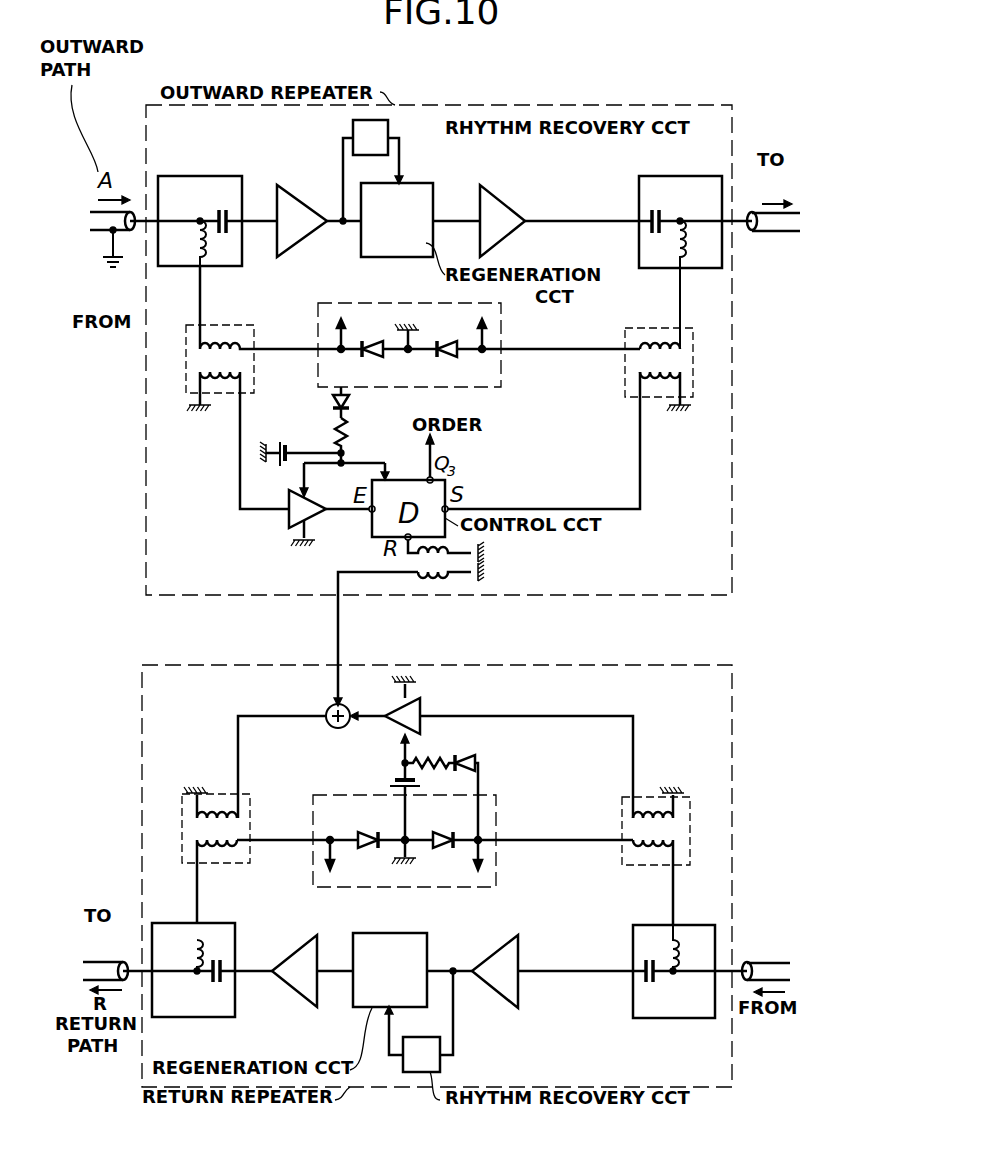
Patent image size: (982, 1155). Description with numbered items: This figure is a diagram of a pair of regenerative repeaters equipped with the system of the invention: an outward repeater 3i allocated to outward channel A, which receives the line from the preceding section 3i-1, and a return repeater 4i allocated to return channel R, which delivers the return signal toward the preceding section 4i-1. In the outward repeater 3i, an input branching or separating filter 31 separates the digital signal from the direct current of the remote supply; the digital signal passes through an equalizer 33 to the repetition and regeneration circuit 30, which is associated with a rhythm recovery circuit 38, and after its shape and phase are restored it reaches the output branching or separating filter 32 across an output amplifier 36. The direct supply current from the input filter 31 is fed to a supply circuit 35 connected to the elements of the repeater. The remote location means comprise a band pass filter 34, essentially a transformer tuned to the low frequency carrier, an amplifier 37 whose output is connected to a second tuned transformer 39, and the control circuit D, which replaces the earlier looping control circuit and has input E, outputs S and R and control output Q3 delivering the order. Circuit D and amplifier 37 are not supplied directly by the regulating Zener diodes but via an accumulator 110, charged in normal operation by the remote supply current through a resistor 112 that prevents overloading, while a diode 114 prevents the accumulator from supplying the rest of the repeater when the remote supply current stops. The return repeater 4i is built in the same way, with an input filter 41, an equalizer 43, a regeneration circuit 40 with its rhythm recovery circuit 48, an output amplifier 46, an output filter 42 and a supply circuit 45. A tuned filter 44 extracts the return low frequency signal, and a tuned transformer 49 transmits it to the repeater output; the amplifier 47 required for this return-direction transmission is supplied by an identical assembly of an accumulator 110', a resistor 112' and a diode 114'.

The regenerative repeater 3i is at (734, 589).
The regenerative repeater 4i is at (734, 681).
The outward path cable section from preceding repeater 3i-1 is at (92, 240).
The return path cable section to preceding repeater 4i-1 is at (141, 962).
The repetition and regeneration circuit 30 is at (361, 247).
The input branching or separating filter 31 is at (200, 176).
The output branching or separating filter 32 is at (674, 176).
The equalizer 33 is at (302, 204).
The band pass filter 34 is at (222, 326).
The supply circuit 35 is at (388, 303).
The output amplifier 36 is at (500, 198).
The amplifier 37 is at (289, 520).
The rhythm recovery circuit 38 is at (389, 130).
The second tuned transformer 39 is at (628, 328).
The accumulator 110 is at (300, 434).
The resistor 112 is at (372, 442).
The diode 114 is at (376, 402).
The repetition and regeneration circuit 40 is at (388, 933).
The input branching or separating filter 41 is at (672, 1018).
The output branching or separating filter 42 is at (196, 1017).
The equalizer 43 is at (495, 952).
The tuned filter 44 is at (220, 863).
The supply circuit 45 is at (496, 822).
The output amplifier 46 is at (292, 989).
The amplifier 47 is at (420, 701).
The rhythm recovery circuit 48 is at (425, 1068).
The tuned transformer 49 is at (648, 865).
The accumulator 110' is at (384, 797).
The resistor 112' is at (440, 748).
The diode 114' is at (495, 784).